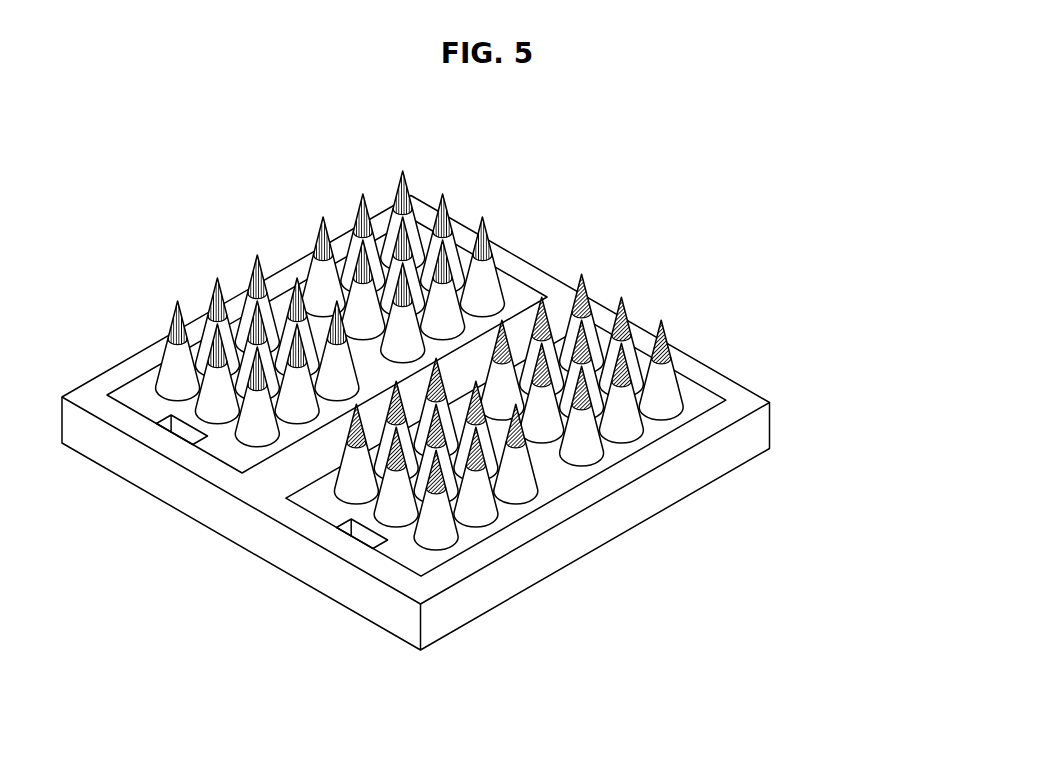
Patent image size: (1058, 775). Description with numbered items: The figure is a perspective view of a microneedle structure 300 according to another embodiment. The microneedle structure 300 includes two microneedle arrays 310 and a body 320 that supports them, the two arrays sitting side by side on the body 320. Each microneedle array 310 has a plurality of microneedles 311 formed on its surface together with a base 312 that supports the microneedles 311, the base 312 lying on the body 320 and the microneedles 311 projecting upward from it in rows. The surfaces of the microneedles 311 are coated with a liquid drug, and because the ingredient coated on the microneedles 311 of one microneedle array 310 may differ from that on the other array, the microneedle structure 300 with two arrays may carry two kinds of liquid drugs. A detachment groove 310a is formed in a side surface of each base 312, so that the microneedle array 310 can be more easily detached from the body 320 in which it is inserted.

The microneedle structure 300 is at (577, 183).
The microneedle array 310 is at (792, 275).
The microneedles 311 is at (667, 360).
The base 312 is at (697, 397).
The detachment groove 310a is at (363, 533).
The body 320 is at (597, 533).